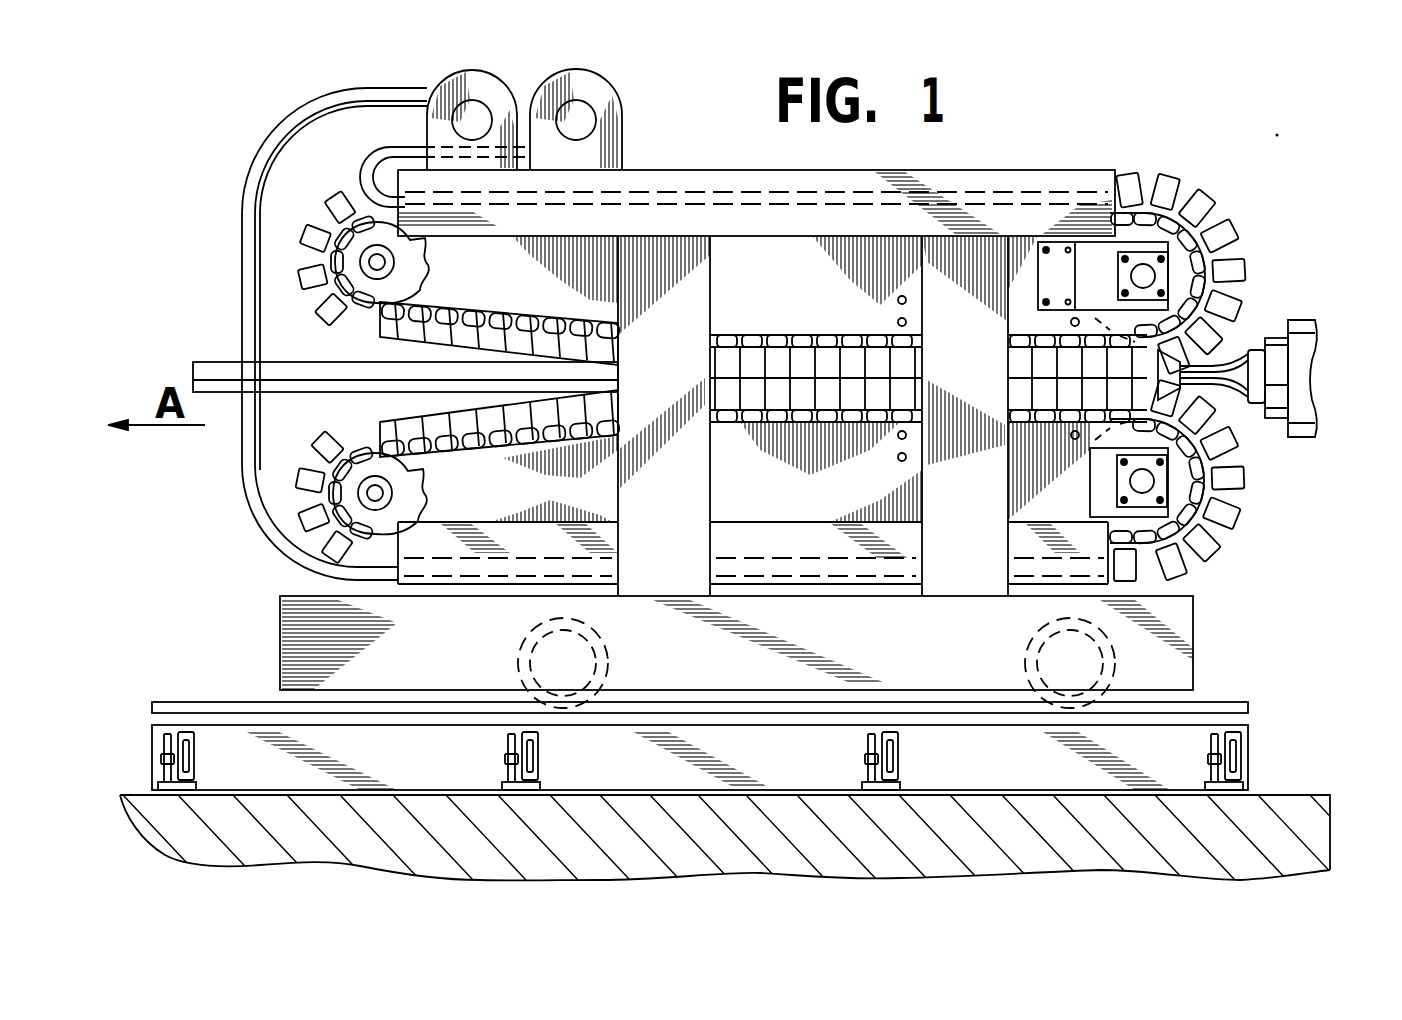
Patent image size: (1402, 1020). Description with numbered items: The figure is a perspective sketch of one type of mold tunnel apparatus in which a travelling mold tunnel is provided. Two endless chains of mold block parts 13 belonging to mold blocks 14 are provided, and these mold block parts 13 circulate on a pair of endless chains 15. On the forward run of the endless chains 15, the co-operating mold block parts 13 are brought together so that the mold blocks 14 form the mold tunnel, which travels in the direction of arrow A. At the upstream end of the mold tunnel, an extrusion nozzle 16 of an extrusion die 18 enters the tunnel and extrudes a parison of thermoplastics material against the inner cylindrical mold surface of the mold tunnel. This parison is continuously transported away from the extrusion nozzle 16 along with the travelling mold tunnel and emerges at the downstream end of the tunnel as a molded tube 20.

The mold block parts 13 is at (315, 228).
The mold blocks 14 is at (805, 368).
The endless chains 15 is at (1207, 200).
The extrusion nozzle 16 is at (1235, 403).
The extrusion die 18 is at (1310, 373).
The molded tube 20 is at (200, 362).